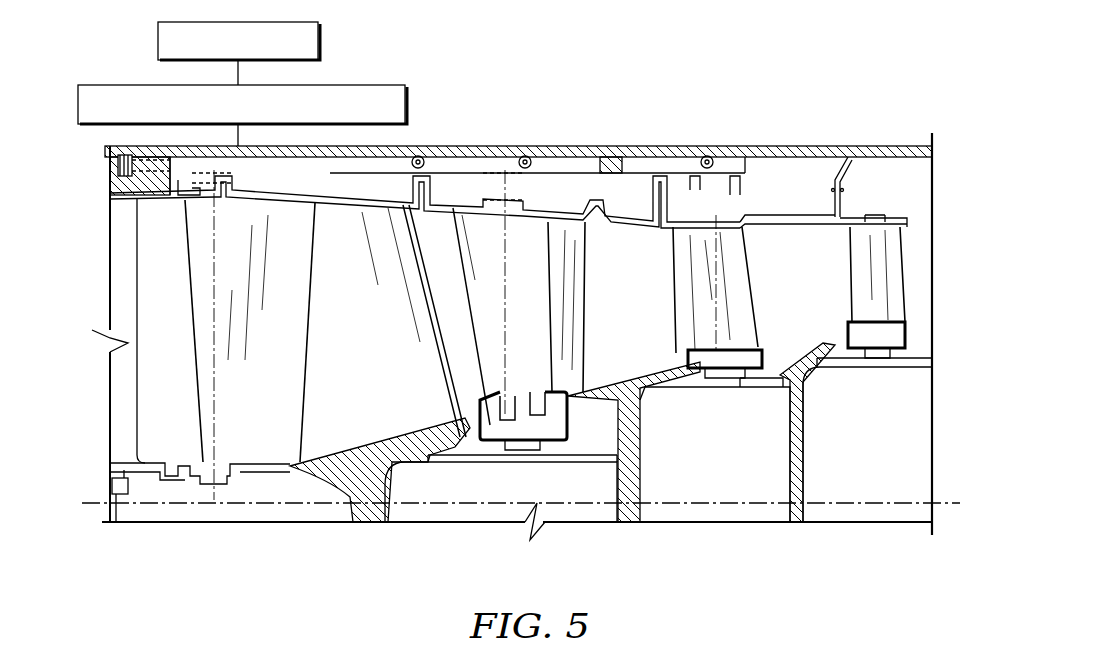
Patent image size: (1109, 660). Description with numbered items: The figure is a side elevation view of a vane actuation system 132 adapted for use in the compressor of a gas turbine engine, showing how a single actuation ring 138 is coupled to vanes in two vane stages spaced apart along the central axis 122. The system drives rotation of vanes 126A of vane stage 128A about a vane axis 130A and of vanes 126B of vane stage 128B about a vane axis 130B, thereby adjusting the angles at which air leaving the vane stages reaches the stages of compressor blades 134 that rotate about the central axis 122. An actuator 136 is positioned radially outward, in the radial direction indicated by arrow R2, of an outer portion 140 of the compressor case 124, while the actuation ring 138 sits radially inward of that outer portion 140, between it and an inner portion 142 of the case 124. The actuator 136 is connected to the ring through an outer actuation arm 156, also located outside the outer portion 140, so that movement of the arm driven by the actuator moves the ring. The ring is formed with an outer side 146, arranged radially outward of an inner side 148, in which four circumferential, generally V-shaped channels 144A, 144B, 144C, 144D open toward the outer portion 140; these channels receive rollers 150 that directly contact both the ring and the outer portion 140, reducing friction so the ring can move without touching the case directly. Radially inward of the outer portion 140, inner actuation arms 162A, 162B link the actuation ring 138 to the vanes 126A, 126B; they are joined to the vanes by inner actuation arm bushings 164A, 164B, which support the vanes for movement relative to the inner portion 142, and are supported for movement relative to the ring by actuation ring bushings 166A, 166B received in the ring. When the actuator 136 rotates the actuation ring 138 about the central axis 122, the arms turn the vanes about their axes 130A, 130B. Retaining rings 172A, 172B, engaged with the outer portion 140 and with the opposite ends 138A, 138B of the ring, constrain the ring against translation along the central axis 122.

The central axis 122 is at (878, 503).
The compressor case 124 is at (840, 60).
The vane 126A is at (206, 303).
The vane 126B is at (524, 343).
The vane stage 128A is at (133, 398).
The vane stage 128B is at (650, 316).
The vane axis 130A is at (213, 435).
The vane axis 130B is at (525, 345).
The vane actuation system 132 is at (745, 52).
The compressor blades 134 is at (346, 357).
The actuator 136 is at (322, 42).
The actuation ring 138 is at (656, 163).
The end of actuation ring 138A is at (232, 150).
The end of actuation ring 138B is at (718, 181).
The outer portion of compressor case 140 is at (817, 148).
The inner portion of compressor case 142 is at (845, 212).
The channel 144A is at (250, 335).
The channel 144B is at (437, 163).
The channel 144C is at (548, 162).
The channel 144D is at (724, 160).
The outer side of actuation ring 146 is at (629, 144).
The inner side of actuation ring 148 is at (686, 193).
The rollers 150 is at (420, 147).
The outer actuation arm 156 is at (374, 82).
The inner actuation arm 162A is at (220, 201).
The inner actuation arm 162B is at (553, 330).
The inner actuation arm bushing 164A is at (200, 201).
The inner actuation arm bushing 164B is at (506, 193).
The actuation ring bushing 166A is at (348, 173).
The actuation ring bushing 166B is at (621, 181).
The retaining ring 172A is at (205, 162).
The retaining ring 172B is at (742, 197).
The radial direction R2 is at (400, 264).